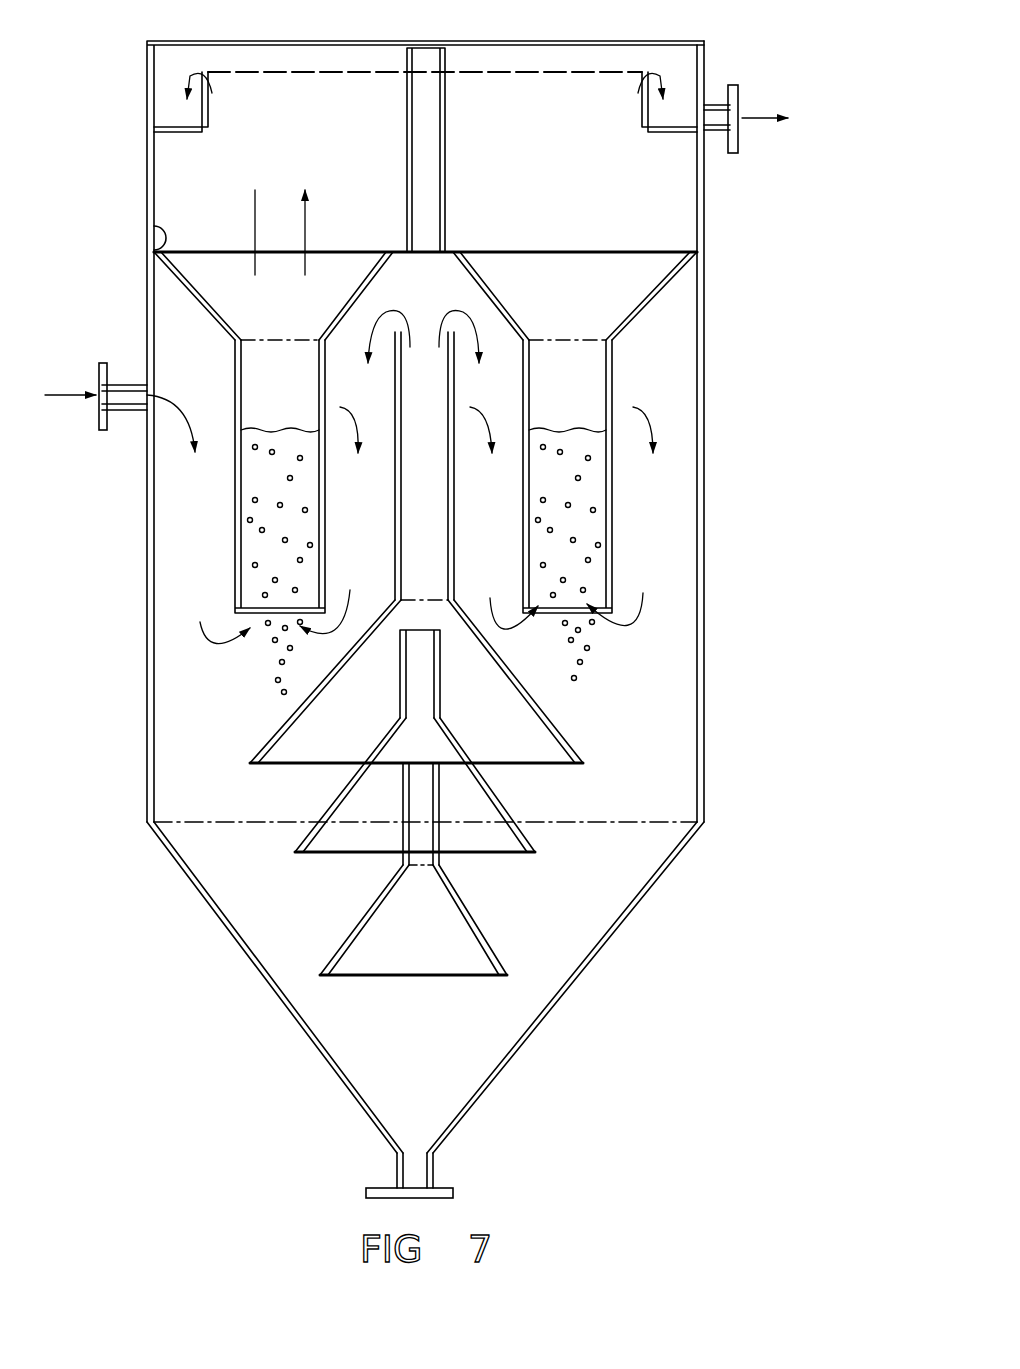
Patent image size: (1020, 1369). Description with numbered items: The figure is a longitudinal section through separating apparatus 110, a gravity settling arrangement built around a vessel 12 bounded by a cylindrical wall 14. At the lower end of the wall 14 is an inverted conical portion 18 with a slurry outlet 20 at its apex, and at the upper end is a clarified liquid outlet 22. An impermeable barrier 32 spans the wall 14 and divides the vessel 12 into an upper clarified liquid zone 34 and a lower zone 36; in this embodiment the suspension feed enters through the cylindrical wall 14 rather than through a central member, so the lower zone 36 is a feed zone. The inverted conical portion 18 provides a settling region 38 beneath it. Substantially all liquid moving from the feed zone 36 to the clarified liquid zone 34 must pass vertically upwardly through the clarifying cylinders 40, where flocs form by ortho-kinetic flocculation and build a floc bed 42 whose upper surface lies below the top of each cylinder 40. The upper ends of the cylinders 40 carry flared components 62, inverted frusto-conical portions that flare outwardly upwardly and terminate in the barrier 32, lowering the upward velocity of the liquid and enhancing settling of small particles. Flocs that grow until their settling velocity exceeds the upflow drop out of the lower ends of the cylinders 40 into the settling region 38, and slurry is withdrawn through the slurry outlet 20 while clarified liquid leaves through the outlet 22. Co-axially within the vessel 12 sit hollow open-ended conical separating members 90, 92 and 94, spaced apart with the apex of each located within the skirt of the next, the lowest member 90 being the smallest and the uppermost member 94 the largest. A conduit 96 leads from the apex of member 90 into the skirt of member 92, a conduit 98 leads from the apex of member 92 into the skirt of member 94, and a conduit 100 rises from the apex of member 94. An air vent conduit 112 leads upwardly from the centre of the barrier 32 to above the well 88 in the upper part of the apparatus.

The gravity settling vessel 12 is at (732, 500).
The cylindrical wall 14 is at (702, 590).
The inverted conical portion 18 is at (586, 968).
The slurry outlet 20 is at (436, 1176).
The clarified liquid outlet 22 is at (713, 105).
The barrier 32 is at (153, 223).
The clarified liquid zone 34 is at (646, 206).
The feed zone 36 is at (193, 587).
The settling region 38 is at (637, 787).
The clarifying cylinder 40 is at (234, 491).
The floc bed 42 is at (253, 462).
The flared component 62 is at (198, 297).
The well 88 is at (166, 126).
The conical separating member 90 is at (470, 921).
The conical separating member 92 is at (497, 801).
The conical separating member 94 is at (536, 706).
The conduit 96 is at (403, 804).
The conduit 98 is at (400, 656).
The conduit 100 is at (455, 522).
The separating apparatus 110 is at (792, 374).
The air vent conduit 112 is at (446, 181).